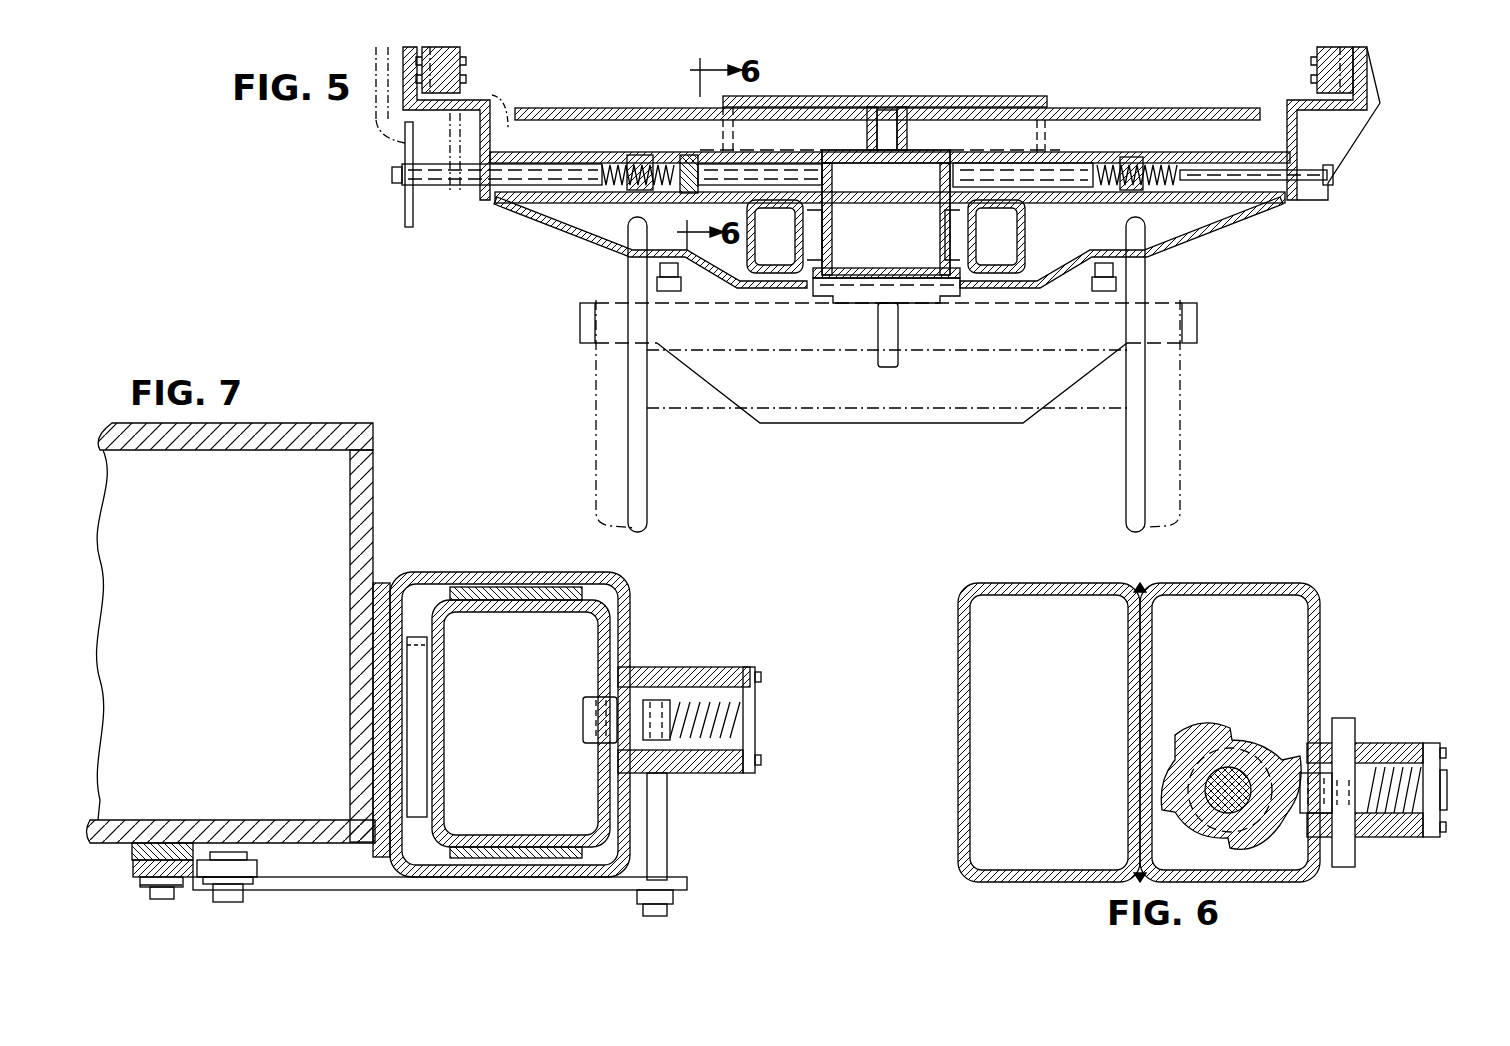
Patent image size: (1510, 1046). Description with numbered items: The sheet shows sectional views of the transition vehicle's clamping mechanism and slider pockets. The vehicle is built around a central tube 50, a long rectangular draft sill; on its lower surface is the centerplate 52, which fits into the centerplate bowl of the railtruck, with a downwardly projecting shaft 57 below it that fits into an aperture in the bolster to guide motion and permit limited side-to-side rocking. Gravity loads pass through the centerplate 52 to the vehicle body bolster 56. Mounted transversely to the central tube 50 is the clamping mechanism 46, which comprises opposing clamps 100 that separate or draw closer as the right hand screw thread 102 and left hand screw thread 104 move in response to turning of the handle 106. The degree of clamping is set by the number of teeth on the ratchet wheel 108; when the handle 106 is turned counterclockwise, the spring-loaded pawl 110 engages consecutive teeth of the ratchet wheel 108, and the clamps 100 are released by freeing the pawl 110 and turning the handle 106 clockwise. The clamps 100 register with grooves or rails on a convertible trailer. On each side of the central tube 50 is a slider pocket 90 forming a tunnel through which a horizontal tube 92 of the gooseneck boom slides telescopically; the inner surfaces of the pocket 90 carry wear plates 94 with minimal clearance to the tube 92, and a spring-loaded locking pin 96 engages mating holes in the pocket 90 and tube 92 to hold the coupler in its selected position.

In FIG. 5, the clamping mechanism 46 is at (364, 56).
In FIG. 7, the central tube 50 is at (375, 522).
In FIG. 5, the centerplate 52 is at (930, 308).
In FIG. 5, the vehicle body bolster 56 is at (1222, 213).
In FIG. 5, the shaft 57 is at (884, 338).
In FIG. 7, the slider pocket 90 is at (632, 598).
In FIG. 7, the horizontal tube 92 is at (612, 645).
In FIG. 7, the wear plate 94 is at (485, 590).
In FIG. 7, the locking pin 96 is at (610, 730).
In FIG. 5, the clamp 100 is at (430, 47).
In FIG. 5, the right hand screw thread 102 is at (662, 160).
In FIG. 5, the left hand screw thread 104 is at (1105, 165).
In FIG. 5, the handle 106 is at (403, 212).
In FIG. 5, the ratchet wheel 108 is at (688, 152).
In FIG. 6, the ratchet wheel 108 is at (1252, 848).
In FIG. 6, the pawl 110 is at (1305, 752).